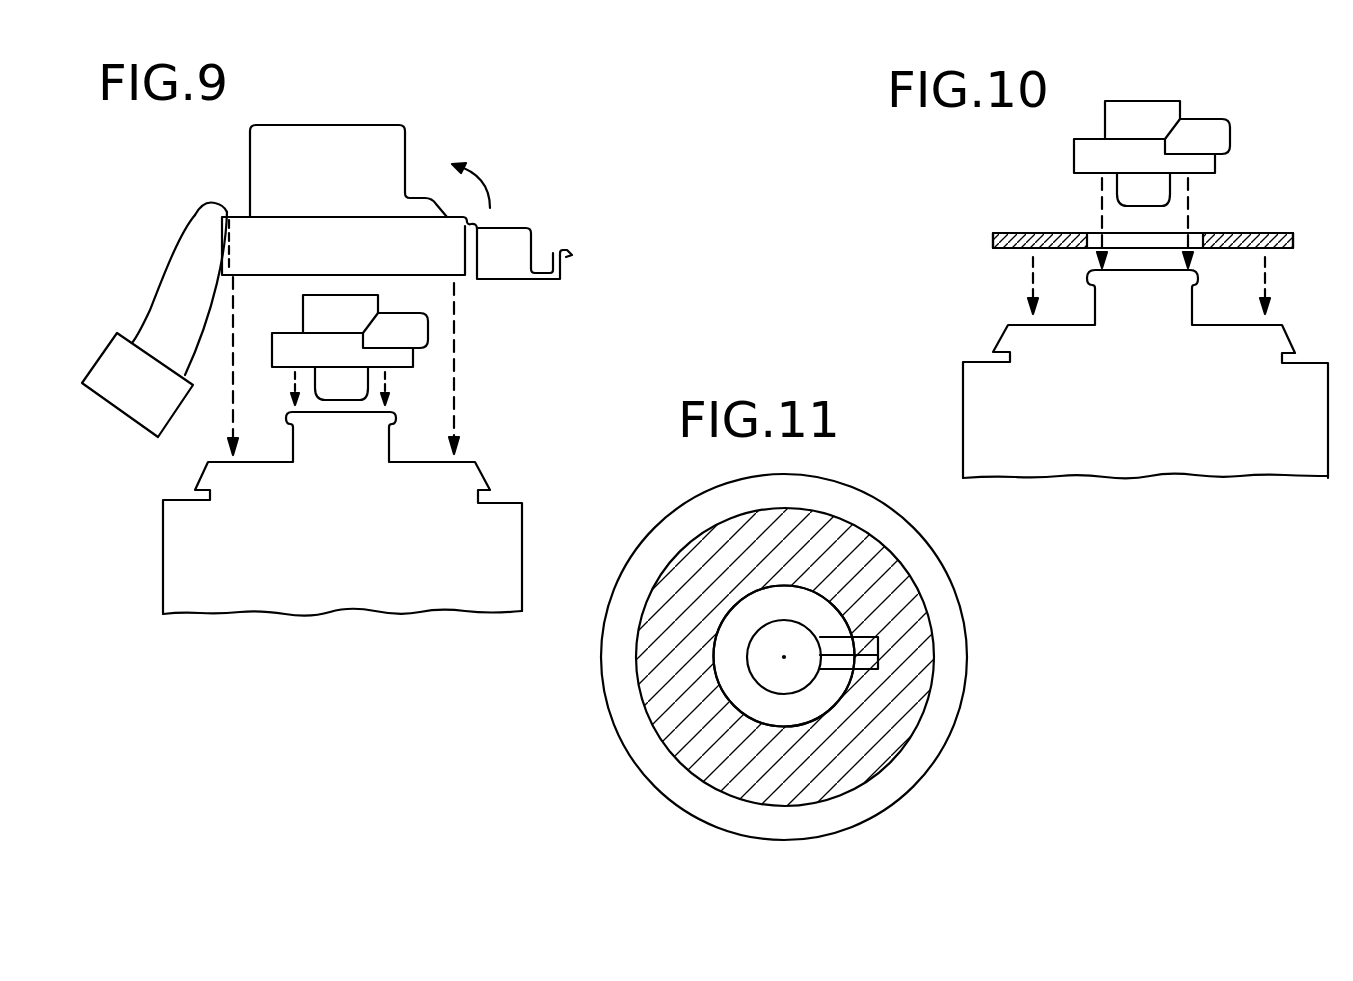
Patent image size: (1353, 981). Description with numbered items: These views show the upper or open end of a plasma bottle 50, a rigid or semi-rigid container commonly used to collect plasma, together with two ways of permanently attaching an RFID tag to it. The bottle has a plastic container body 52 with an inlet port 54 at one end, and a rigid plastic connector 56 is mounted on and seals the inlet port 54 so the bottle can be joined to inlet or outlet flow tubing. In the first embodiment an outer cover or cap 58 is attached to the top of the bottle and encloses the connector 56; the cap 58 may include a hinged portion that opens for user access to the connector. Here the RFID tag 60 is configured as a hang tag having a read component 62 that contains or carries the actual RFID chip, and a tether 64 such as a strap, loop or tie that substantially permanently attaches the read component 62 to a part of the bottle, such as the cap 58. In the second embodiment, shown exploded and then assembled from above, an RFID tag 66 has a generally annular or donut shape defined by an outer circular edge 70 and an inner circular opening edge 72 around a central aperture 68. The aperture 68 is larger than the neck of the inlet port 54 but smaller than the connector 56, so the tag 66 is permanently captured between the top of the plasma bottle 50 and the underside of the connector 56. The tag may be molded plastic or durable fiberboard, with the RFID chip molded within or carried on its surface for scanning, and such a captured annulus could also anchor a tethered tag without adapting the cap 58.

In FIG. 9, the plasma bottle 50 is at (368, 531).
In FIG. 10, the plasma bottle 50 is at (1099, 393).
In FIG. 9, the container body 52 is at (305, 595).
In FIG. 10, the container body 52 is at (1113, 453).
In FIG. 11, the container body 52 is at (962, 684).
In FIG. 9, the inlet port 54 is at (372, 407).
In FIG. 10, the inlet port 54 is at (1133, 272).
In FIG. 9, the connector 56 is at (393, 328).
In FIG. 10, the connector 56 is at (1213, 128).
In FIG. 11, the connector 56 is at (784, 646).
In FIG. 9, the cap 58 is at (387, 153).
In FIG. 9, the RFID tag 60 is at (117, 332).
In FIG. 9, the read component 62 is at (132, 395).
In FIG. 9, the tether 64 is at (190, 208).
In FIG. 10, the RFID tag 66 is at (1095, 215).
In FIG. 11, the RFID tag 66 is at (893, 729).
In FIG. 10, the central aperture 68 is at (1157, 238).
In FIG. 10, the outer circular edge 70 is at (993, 240).
In FIG. 11, the outer circular edge 70 is at (694, 777).
In FIG. 10, the inner circular opening edge 72 is at (1093, 232).